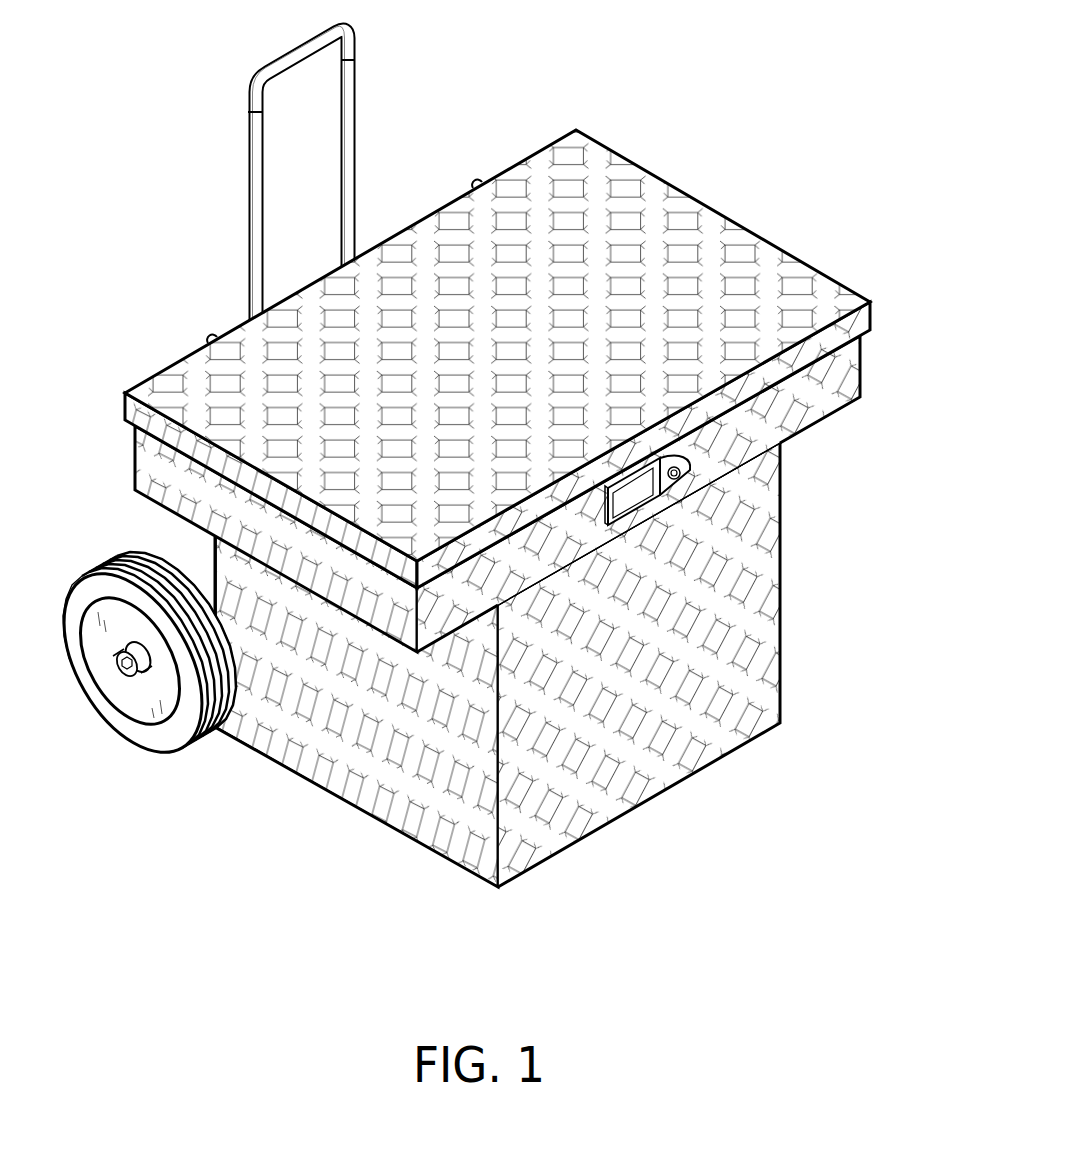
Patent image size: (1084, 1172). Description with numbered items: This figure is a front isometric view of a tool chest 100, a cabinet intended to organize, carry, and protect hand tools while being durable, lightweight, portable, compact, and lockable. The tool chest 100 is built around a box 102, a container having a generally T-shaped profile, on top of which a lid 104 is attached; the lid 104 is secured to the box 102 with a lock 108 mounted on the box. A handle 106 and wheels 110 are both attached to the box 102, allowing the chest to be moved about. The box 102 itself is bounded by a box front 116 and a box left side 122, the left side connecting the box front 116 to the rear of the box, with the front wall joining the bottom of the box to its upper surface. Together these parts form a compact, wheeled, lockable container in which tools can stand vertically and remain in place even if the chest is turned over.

The tool chest 100 is at (488, 459).
The box 102 is at (538, 624).
The lid 104 is at (773, 272).
The handle 106 is at (352, 93).
The lock 108 is at (685, 476).
The wheels 110 is at (120, 738).
The box front 116 is at (556, 808).
The box left side 122 is at (397, 770).